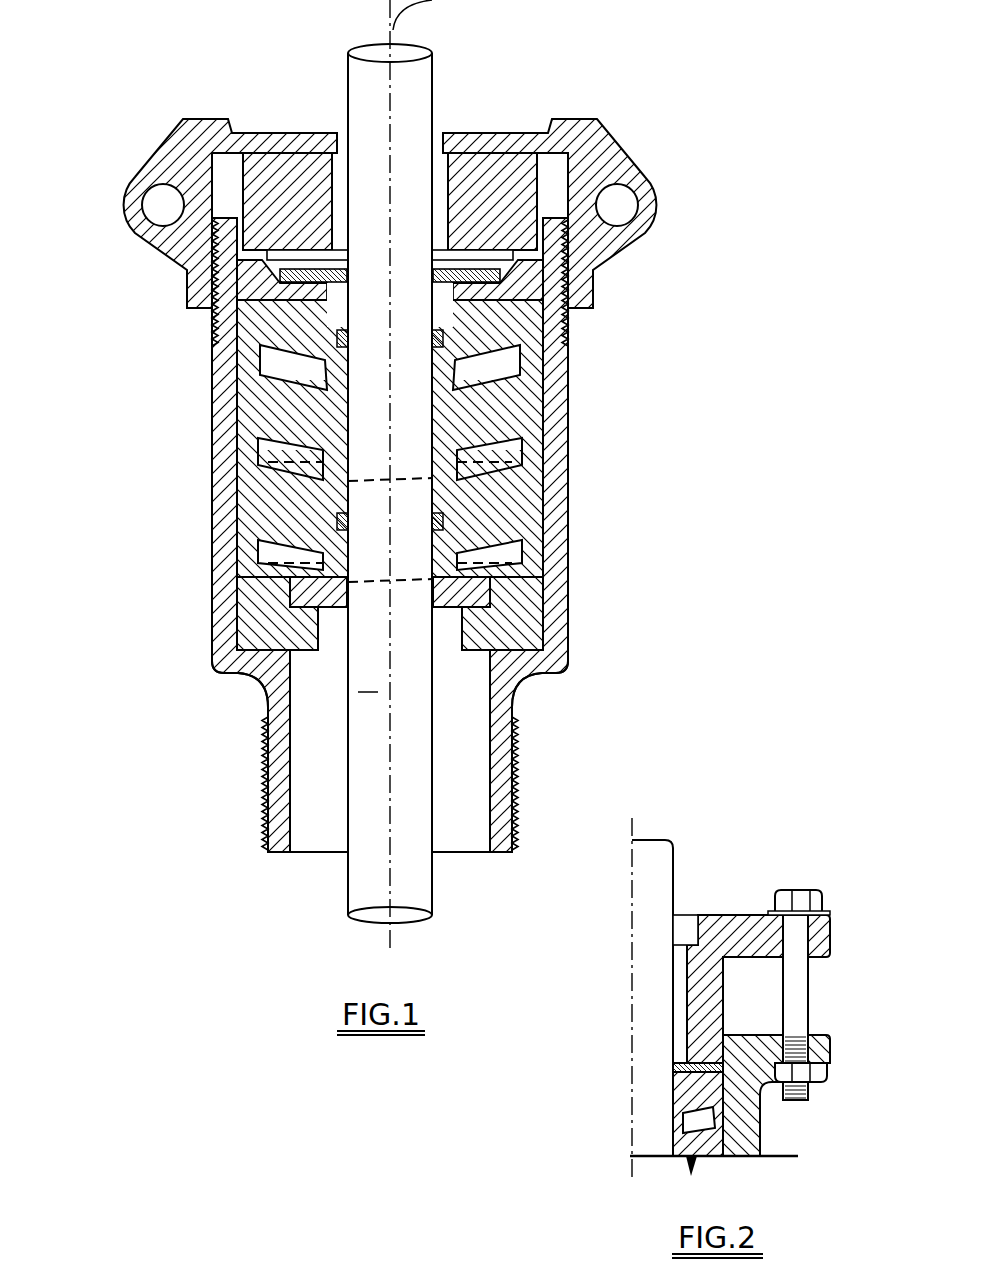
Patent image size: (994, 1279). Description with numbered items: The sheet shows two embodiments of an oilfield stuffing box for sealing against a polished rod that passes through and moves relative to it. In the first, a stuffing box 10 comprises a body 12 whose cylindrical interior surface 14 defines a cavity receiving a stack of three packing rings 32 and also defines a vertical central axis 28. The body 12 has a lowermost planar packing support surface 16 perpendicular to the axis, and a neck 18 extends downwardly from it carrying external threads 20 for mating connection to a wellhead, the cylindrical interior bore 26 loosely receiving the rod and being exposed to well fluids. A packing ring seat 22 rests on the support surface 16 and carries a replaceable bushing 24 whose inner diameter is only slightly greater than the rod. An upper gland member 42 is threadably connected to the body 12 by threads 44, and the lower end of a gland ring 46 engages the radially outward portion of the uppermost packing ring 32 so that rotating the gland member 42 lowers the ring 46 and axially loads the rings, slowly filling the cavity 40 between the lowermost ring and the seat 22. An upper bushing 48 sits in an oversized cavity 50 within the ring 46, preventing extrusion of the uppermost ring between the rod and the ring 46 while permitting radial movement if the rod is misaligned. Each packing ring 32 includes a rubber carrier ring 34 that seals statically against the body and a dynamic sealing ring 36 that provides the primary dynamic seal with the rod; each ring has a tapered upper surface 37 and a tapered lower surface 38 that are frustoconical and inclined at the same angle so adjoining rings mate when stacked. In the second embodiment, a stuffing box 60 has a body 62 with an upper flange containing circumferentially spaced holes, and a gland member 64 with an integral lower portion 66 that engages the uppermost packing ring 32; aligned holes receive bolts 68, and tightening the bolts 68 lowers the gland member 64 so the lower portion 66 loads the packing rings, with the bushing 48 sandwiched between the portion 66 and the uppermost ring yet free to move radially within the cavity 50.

In FIG. 1, the stuffing box 10 is at (379, 474).
In FIG. 1, the body 12 is at (218, 530).
In FIG. 1, the interior surface 14 is at (548, 430).
In FIG. 1, the lowermost packing support surface 16 is at (240, 678).
In FIG. 1, the neck 18 is at (520, 695).
In FIG. 1, the external threads of neck 20 is at (508, 790).
In FIG. 1, the packing ring seat 22 is at (520, 622).
In FIG. 1, the replaceable bushing 24 is at (520, 573).
In FIG. 1, the cylindrical interior bore 26 is at (441, 781).
In FIG. 2, the central axis 28 is at (632, 826).
In FIG. 1, the packing ring 32 is at (243, 318).
In FIG. 2, the packing ring 32 is at (685, 1088).
In FIG. 1, the rubber carrier ring 34 is at (245, 398).
In FIG. 1, the dynamic sealing ring 36 is at (245, 448).
In FIG. 2, the dynamic sealing ring 36 is at (690, 1120).
In FIG. 1, the tapered upper surface 37 is at (360, 482).
In FIG. 1, the tapered lower surface 38 is at (362, 582).
In FIG. 1, the cavity 40 is at (258, 568).
In FIG. 1, the gland member 42 is at (625, 156).
In FIG. 1, the threads 44 is at (572, 292).
In FIG. 1, the gland ring 46 is at (500, 165).
In FIG. 1, the upper bushing 48 is at (597, 122).
In FIG. 2, the upper bushing 48 is at (690, 1072).
In FIG. 1, the cavity 50 is at (520, 238).
In FIG. 2, the cavity 50 is at (690, 1063).
In FIG. 2, the stuffing box 60 is at (738, 985).
In FIG. 2, the stuffing box body 62 is at (760, 1128).
In FIG. 2, the gland member 64 is at (833, 932).
In FIG. 2, the lower portion 66 is at (702, 1013).
In FIG. 2, the bolt 68 is at (800, 990).